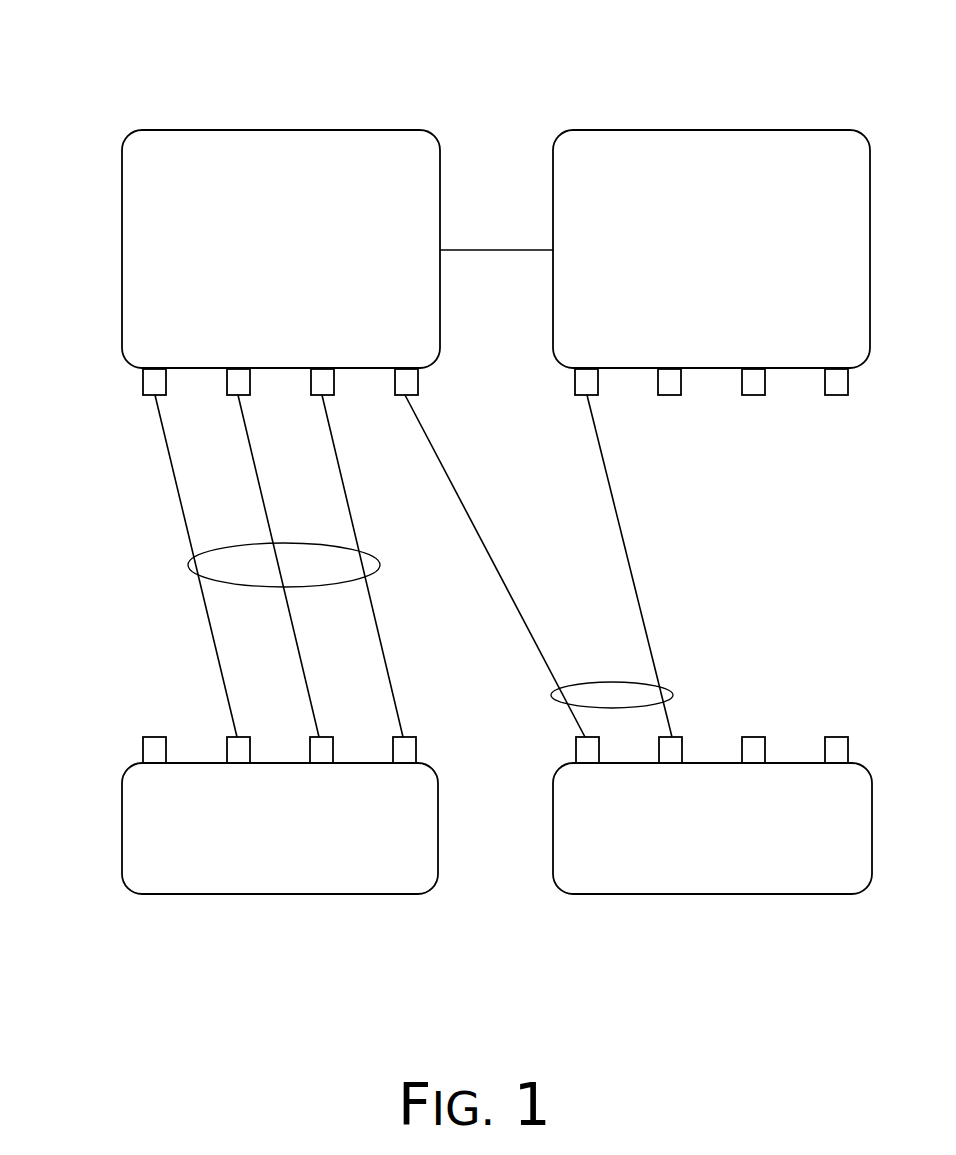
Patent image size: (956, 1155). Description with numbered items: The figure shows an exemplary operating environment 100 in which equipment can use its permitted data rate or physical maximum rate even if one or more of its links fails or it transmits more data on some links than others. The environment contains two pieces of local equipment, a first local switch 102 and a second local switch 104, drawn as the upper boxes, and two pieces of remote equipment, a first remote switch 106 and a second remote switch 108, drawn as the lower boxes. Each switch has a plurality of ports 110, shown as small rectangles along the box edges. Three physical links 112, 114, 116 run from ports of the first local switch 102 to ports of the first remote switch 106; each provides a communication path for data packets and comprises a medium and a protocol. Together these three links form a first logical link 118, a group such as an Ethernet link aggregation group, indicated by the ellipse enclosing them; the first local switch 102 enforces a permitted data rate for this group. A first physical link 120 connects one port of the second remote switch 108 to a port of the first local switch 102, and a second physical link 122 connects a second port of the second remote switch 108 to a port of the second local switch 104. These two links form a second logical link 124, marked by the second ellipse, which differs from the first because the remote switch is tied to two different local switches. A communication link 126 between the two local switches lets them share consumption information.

The operating environment 100 is at (172, 36).
The first local switch 102 is at (200, 130).
The second local switch 104 is at (630, 130).
The first remote switch 106 is at (198, 894).
The second remote switch 108 is at (630, 894).
The ports 110 is at (153, 380).
The physical link 112 is at (177, 486).
The physical link 114 is at (264, 505).
The physical link 116 is at (353, 523).
The first logical link 118 is at (188, 567).
The first physical link 120 is at (478, 535).
The second physical link 122 is at (622, 547).
The second logical link 124 is at (553, 696).
The communication link 126 is at (525, 249).